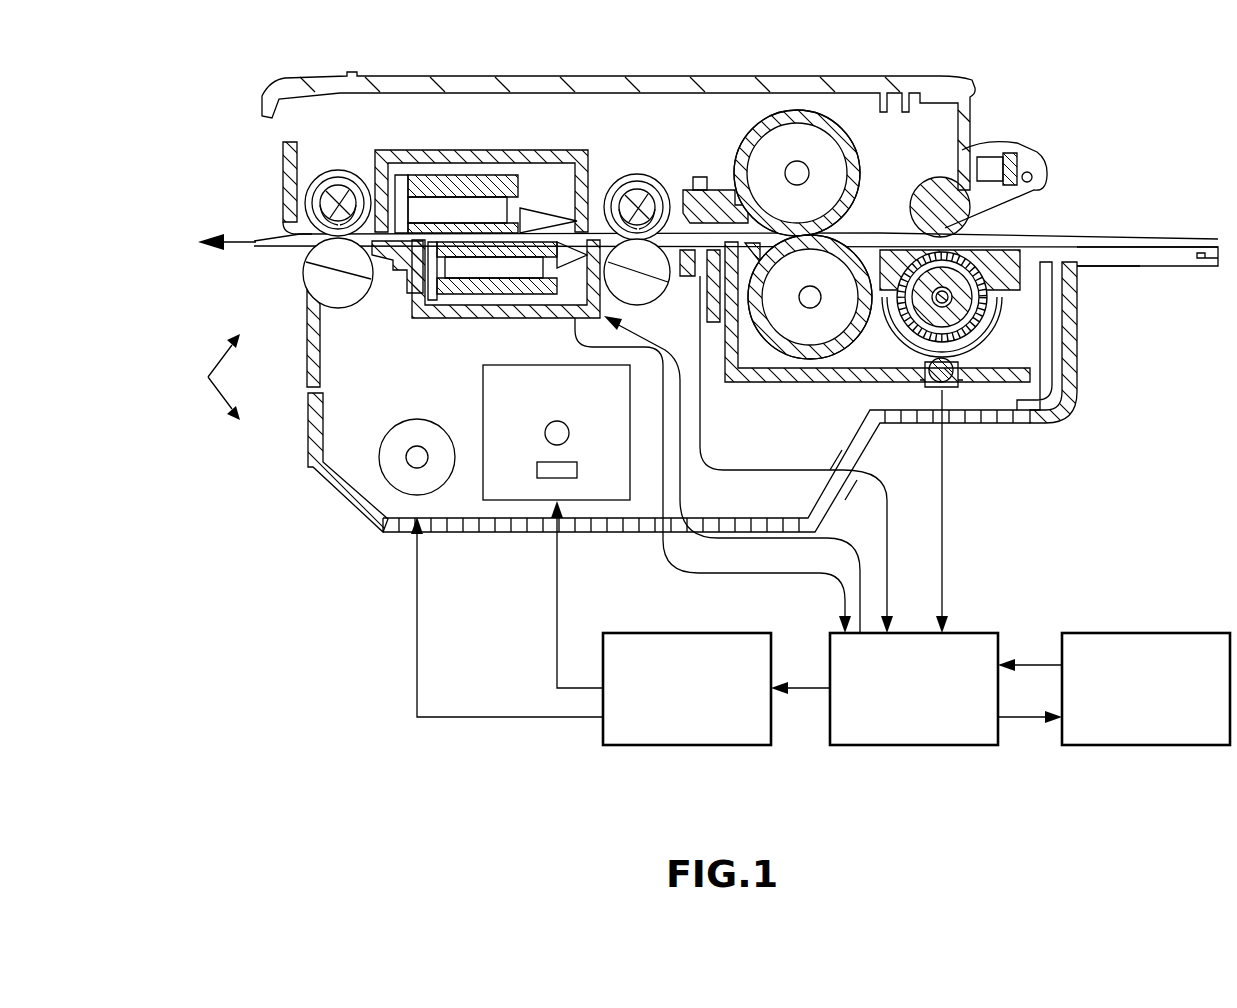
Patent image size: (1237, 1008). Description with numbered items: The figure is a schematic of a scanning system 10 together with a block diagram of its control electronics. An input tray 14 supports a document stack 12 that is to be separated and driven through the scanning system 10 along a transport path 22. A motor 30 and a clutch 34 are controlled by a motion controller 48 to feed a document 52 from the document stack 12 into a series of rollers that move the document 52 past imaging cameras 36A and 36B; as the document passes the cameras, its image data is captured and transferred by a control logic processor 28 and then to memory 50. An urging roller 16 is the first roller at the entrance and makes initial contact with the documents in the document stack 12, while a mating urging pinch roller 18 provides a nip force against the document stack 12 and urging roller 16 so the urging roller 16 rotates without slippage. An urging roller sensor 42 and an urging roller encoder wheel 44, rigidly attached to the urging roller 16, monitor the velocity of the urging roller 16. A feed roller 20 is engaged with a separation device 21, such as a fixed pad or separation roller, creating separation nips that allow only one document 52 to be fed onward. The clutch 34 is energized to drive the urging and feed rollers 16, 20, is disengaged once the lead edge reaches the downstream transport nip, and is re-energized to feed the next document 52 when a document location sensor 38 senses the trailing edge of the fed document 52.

The scanning system 10 is at (316, 682).
The document stack 12 is at (1156, 235).
The input tray 14 is at (1141, 268).
The urging roller 16 is at (1005, 229).
The urging pinch roller 18 is at (996, 148).
The feed roller 20 is at (850, 234).
The separation device 21 is at (838, 122).
The transport path 22 is at (250, 233).
The control logic processor 28 is at (979, 736).
The motor 30 is at (495, 508).
The clutch 34 is at (401, 479).
The camera 36A is at (460, 300).
The camera 36B is at (480, 176).
The document location sensor 38 is at (701, 181).
The urging roller sensor 42 is at (950, 388).
The urging roller encoder wheel 44 is at (990, 342).
The motion controller 48 is at (750, 734).
The memory 50 is at (1173, 731).
The document 52 is at (612, 182).